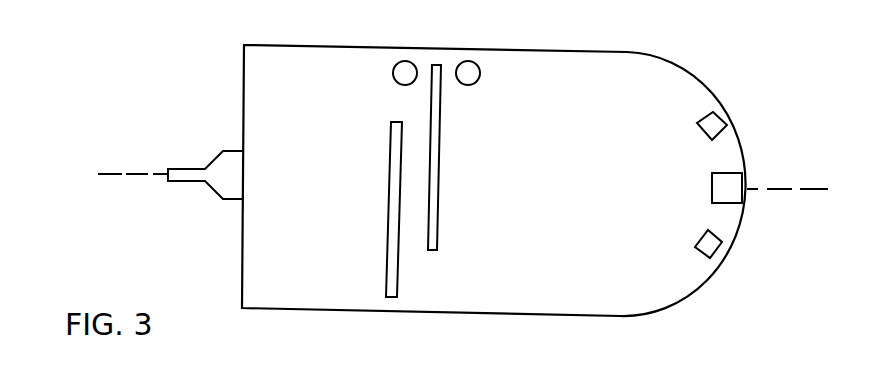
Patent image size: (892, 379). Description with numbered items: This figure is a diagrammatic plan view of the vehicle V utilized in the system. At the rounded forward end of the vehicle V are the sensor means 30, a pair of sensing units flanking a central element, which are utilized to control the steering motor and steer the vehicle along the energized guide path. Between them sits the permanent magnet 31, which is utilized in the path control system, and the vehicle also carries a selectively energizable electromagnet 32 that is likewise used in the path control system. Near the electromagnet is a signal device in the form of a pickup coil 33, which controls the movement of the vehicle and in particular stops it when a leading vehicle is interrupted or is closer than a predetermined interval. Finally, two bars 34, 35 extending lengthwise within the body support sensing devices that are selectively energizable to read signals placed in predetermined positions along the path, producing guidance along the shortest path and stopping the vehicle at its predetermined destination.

The vehicle V is at (660, 58).
The sensor means 30 is at (704, 231).
The permanent magnet 31 is at (738, 178).
The selectively energizable electromagnet 32 is at (478, 81).
The pickup coil 33 is at (394, 78).
The bar 34 is at (436, 163).
The bar 35 is at (393, 208).